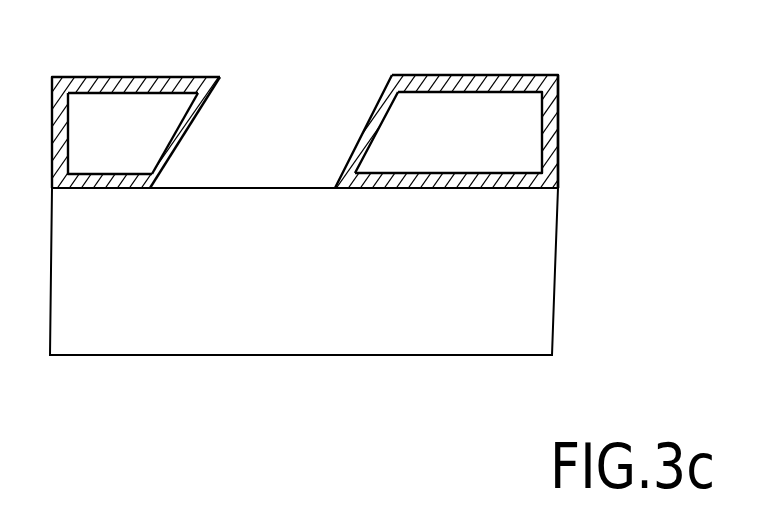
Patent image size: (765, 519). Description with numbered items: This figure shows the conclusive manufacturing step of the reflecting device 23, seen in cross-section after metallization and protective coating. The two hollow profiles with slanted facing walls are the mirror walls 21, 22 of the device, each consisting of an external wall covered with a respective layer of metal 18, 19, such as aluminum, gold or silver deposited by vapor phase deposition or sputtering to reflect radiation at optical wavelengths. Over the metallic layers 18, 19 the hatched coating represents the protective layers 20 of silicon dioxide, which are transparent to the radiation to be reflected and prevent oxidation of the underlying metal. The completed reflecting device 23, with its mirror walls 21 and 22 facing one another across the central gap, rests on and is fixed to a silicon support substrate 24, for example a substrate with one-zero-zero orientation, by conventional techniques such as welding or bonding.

The layer of metal 18 is at (352, 138).
The layer of metal 19 is at (175, 160).
The protective layer 20 is at (180, 77).
The mirror wall 21 is at (358, 126).
The mirror wall 22 is at (207, 137).
The reflecting device 23 is at (561, 72).
The silicon support substrate 24 is at (532, 313).